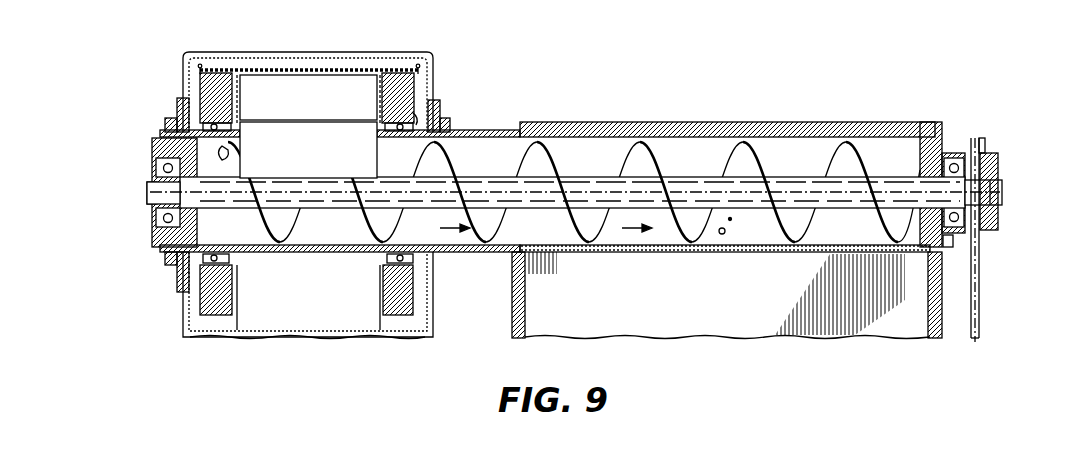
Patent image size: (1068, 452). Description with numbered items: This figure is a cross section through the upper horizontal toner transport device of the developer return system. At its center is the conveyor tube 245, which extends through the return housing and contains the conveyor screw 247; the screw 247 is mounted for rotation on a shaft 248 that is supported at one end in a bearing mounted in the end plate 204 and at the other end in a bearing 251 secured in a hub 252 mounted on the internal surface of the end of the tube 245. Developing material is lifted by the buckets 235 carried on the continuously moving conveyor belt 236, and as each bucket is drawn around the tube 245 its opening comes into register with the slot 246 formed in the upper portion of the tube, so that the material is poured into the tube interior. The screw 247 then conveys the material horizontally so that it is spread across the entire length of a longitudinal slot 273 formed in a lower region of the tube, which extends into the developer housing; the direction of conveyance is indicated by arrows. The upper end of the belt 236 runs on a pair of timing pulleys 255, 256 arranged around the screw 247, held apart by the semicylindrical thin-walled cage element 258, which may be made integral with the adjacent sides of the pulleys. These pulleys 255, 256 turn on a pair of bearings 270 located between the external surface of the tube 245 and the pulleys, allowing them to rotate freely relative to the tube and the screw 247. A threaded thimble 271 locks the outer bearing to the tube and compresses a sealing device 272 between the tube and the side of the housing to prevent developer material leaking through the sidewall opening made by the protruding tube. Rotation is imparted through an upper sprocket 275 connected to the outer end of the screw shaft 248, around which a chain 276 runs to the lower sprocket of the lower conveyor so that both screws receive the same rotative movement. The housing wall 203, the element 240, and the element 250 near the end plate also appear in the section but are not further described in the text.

The housing wall 203 is at (527, 290).
The end plate 204 is at (930, 320).
The buckets 235 is at (313, 85).
The conveyor belt 236 is at (366, 72).
The motor stator core 240 is at (243, 94).
The conveyor tube 245 is at (484, 255).
The slot 246 is at (352, 178).
The conveyor screw 247 is at (436, 166).
The shaft 248 is at (802, 186).
The bearing block 250 is at (950, 152).
The bearing 251 is at (158, 170).
The hub 252 is at (156, 232).
The timing pulley 255 is at (418, 84).
The timing pulley 256 is at (205, 92).
The cage element 258 is at (303, 256).
The bearings 270 is at (226, 146).
The threaded thimble 271 is at (170, 127).
The sealing device 272 is at (178, 282).
The longitudinal slot 273 is at (730, 220).
The upper sprocket 275 is at (984, 146).
The chain 276 is at (988, 305).